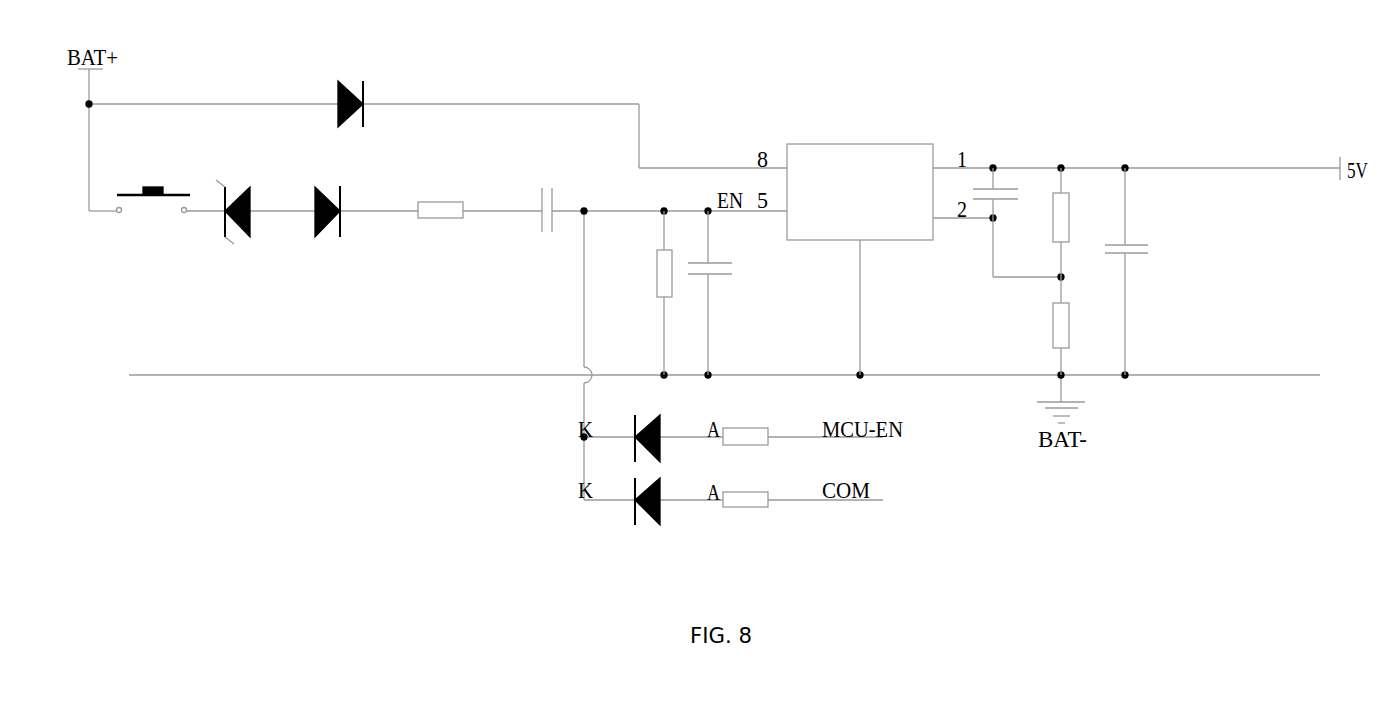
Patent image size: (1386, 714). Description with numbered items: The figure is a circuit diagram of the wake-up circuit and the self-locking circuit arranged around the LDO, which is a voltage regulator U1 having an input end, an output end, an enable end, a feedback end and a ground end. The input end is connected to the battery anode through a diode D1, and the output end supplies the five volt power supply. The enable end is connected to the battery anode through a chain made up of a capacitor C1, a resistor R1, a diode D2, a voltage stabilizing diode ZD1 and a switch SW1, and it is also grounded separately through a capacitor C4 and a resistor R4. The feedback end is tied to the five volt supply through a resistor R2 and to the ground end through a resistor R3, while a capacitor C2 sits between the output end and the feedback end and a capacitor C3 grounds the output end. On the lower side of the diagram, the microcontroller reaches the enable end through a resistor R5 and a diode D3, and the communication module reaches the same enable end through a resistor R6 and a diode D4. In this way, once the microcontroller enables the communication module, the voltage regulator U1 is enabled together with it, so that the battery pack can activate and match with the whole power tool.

The switch SW1 is at (154, 186).
The voltage stabilizing diode ZD1 is at (221, 202).
The diode D1 is at (352, 106).
The diode D2 is at (348, 210).
The diode D3 is at (642, 440).
The diode D4 is at (642, 501).
The resistor R1 is at (459, 213).
The resistor R2 is at (1084, 222).
The resistor R3 is at (1085, 326).
The resistor R4 is at (648, 293).
The resistor R5 is at (787, 442).
The resistor R6 is at (757, 501).
The capacitor C1 is at (577, 212).
The capacitor C2 is at (993, 222).
The capacitor C3 is at (1164, 271).
The capacitor C4 is at (747, 293).
The voltage regulator U1 is at (857, 237).